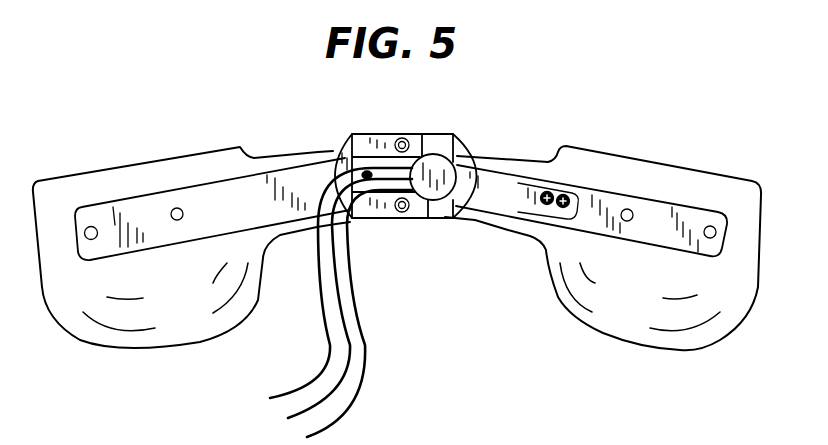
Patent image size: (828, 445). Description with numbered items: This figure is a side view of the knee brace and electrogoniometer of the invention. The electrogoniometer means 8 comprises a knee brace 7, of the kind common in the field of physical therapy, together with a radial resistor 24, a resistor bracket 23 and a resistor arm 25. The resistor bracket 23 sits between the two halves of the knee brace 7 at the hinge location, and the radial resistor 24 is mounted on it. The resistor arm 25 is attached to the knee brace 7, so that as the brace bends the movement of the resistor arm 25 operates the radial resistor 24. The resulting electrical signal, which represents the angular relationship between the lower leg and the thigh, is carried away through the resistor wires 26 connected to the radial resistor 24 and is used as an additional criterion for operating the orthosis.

The knee brace 7 is at (218, 195).
The electrogoniometer means 8 is at (263, 123).
The resistor bracket 23 is at (432, 142).
The radial resistor 24 is at (445, 158).
The resistor arm 25 is at (493, 177).
The resistor wires 26 is at (368, 360).